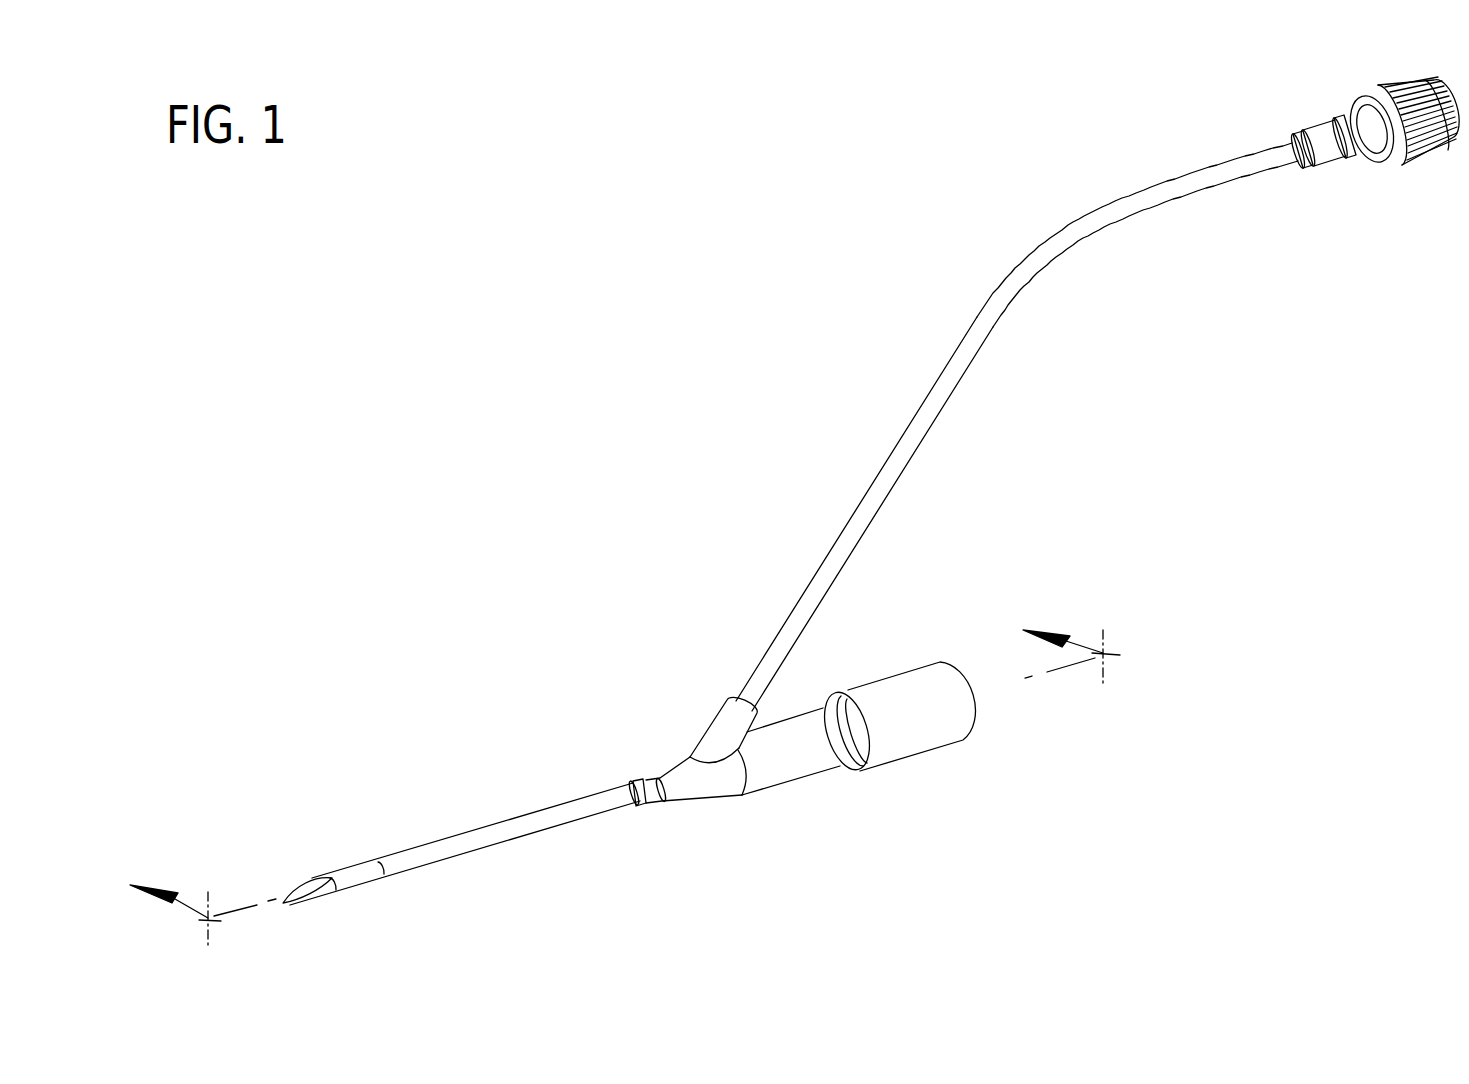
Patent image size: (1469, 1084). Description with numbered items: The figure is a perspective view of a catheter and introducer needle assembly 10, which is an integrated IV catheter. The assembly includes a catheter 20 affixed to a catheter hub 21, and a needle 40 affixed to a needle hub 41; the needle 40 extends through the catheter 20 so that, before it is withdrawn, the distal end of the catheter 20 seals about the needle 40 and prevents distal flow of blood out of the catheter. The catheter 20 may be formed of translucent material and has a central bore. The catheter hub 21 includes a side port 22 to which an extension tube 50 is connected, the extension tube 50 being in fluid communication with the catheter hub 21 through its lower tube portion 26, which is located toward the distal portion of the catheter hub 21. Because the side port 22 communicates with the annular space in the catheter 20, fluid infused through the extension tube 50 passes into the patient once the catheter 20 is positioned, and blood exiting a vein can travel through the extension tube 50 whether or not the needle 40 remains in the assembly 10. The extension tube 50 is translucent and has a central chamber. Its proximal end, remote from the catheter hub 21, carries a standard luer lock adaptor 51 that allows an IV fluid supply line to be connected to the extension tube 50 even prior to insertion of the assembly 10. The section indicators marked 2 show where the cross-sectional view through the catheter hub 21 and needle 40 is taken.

The catheter and introducer needle assembly 10 is at (570, 436).
The catheter 20 is at (488, 827).
The catheter hub 21 is at (803, 777).
The side port 22 is at (690, 745).
The lower tube portion 26 is at (820, 570).
The needle 40 is at (320, 887).
The needle hub 41 is at (903, 758).
The extension tube 50 is at (1105, 203).
The luer lock adaptor 51 is at (1347, 108).
The section line 2- 2 is at (640, 788).